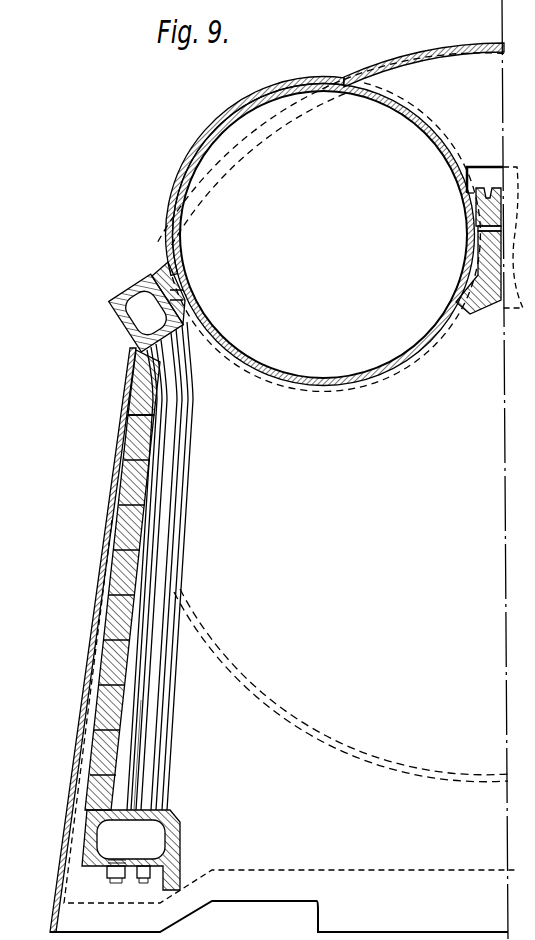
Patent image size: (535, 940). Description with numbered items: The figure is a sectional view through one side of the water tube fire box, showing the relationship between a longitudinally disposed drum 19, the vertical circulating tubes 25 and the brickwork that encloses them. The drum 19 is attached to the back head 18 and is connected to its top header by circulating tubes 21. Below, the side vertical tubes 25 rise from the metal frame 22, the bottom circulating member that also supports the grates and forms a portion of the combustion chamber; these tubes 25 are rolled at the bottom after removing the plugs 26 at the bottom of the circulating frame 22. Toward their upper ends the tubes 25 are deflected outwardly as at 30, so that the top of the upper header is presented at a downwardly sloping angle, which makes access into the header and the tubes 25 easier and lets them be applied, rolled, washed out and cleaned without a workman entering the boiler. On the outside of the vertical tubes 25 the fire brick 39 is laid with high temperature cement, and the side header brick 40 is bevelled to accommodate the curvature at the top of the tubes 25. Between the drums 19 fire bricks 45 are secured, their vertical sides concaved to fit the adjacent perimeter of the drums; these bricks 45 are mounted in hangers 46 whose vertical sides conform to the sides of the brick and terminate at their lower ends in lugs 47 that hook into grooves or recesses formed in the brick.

The back head 18 is at (341, 638).
The drum 19 is at (324, 235).
The circulating tube 21 is at (183, 296).
The metal frame 22 is at (108, 832).
The side vertical tube 25 is at (140, 727).
The plug 26 is at (125, 866).
The outwardly deflected upper end portion 30 is at (165, 386).
The fire brick 39 is at (112, 584).
The side header brick 40 is at (135, 372).
The fire brick 45 is at (492, 292).
The hanger 46 is at (482, 167).
The lug 47 is at (478, 271).